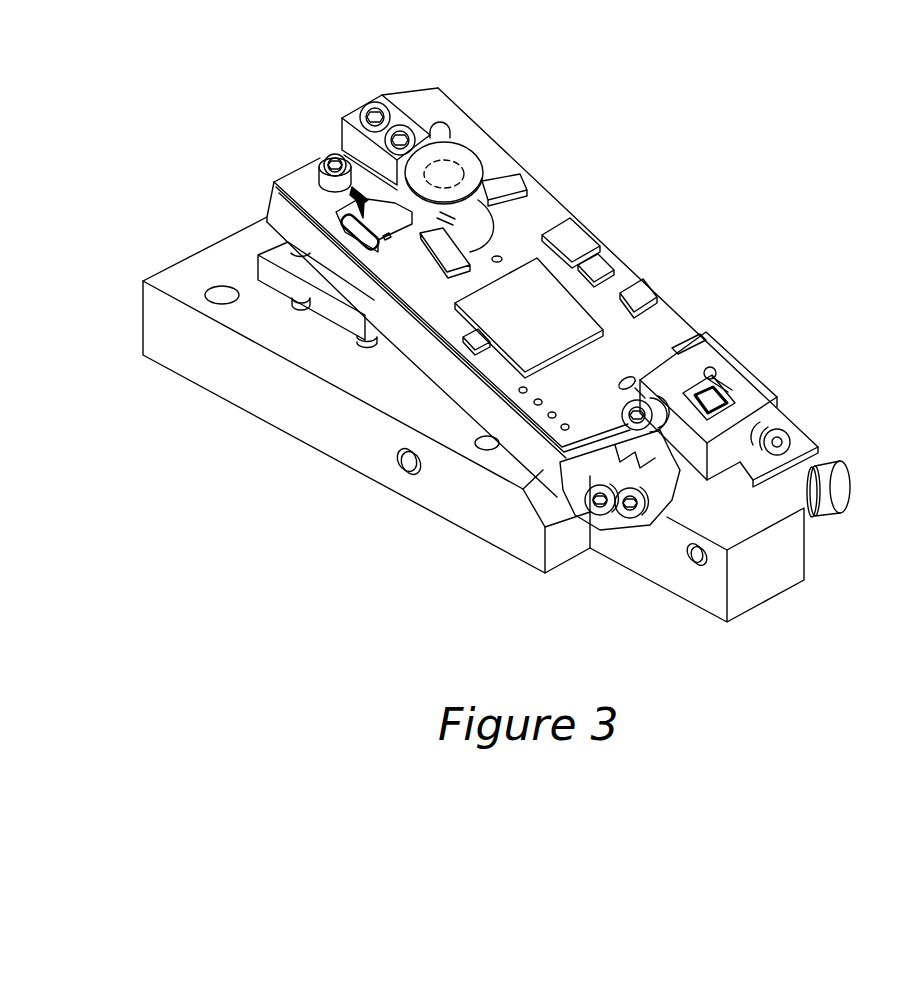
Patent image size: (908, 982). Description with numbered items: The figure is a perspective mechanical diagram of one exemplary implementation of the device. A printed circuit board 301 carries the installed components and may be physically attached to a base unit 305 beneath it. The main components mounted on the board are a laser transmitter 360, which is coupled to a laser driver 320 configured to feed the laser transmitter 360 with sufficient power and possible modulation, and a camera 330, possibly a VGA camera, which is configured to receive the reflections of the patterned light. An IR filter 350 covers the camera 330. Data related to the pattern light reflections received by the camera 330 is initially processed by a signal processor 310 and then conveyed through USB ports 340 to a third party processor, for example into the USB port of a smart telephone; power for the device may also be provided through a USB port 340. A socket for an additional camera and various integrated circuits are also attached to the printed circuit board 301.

The printed circuit board 301 is at (430, 292).
The base unit 305 is at (260, 380).
The signal processor 310 is at (540, 297).
The laser driver 320 is at (640, 290).
The camera 330 is at (462, 165).
The USB ports 340 is at (342, 160).
The IR filter 350 is at (460, 165).
The laser transmitter 360 is at (725, 372).